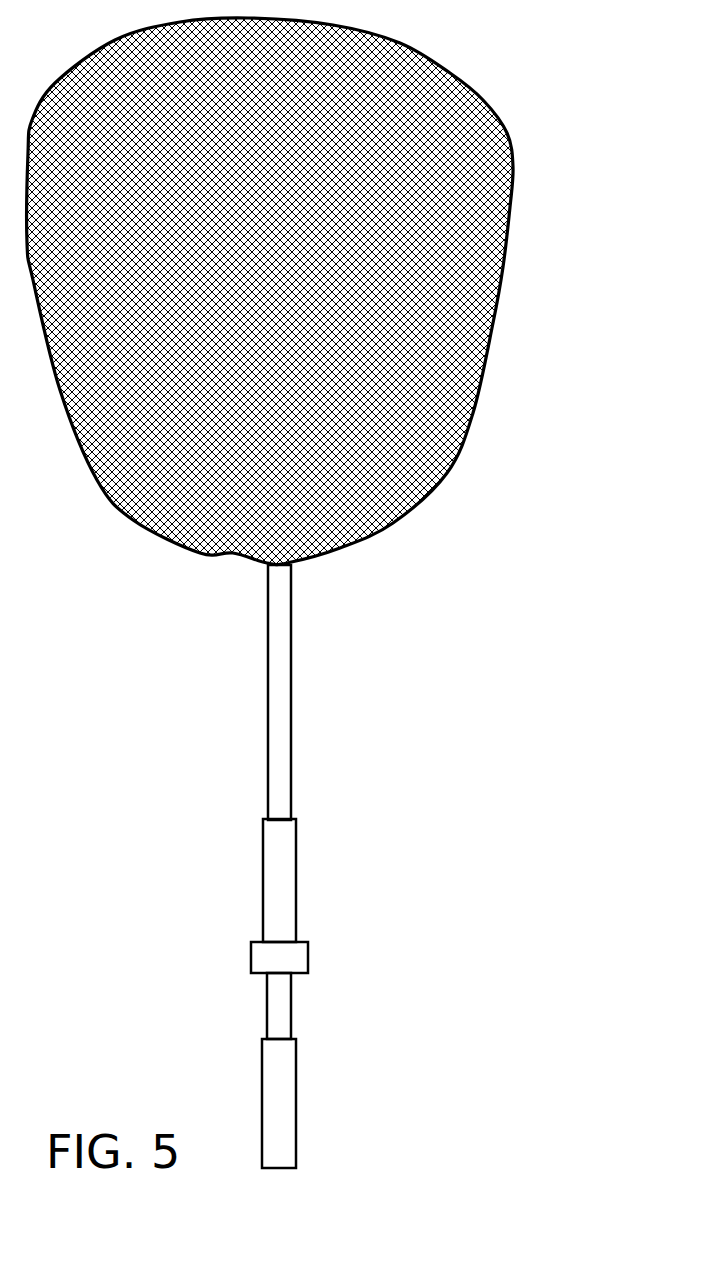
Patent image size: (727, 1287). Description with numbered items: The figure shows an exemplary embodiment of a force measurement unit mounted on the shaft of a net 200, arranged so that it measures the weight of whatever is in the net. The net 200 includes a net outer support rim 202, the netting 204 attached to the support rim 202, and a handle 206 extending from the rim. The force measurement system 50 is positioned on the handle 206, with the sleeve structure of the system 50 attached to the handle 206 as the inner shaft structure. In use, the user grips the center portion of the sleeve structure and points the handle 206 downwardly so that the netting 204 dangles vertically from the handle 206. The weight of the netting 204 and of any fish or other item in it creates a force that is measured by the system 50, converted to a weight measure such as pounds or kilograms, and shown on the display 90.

The net 200 is at (510, 598).
The net outer support rim 202 is at (517, 200).
The netting 204 is at (403, 313).
The handle 206 is at (302, 683).
The force measurement system 50 is at (305, 887).
The display 90 is at (308, 955).